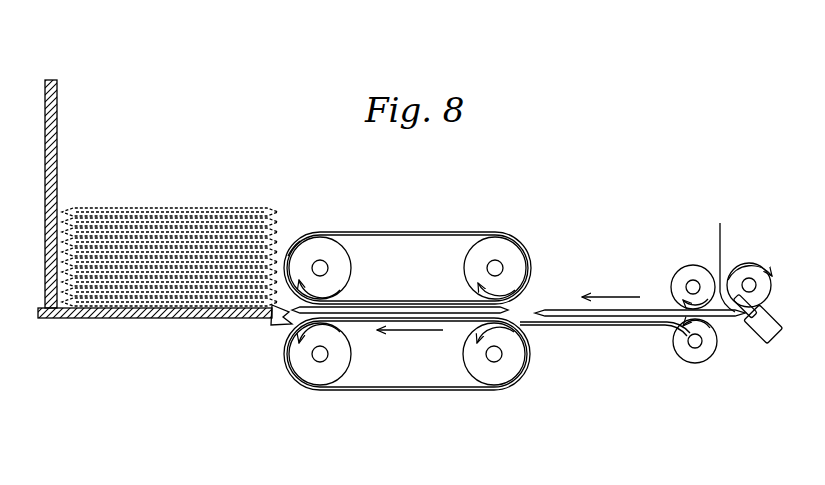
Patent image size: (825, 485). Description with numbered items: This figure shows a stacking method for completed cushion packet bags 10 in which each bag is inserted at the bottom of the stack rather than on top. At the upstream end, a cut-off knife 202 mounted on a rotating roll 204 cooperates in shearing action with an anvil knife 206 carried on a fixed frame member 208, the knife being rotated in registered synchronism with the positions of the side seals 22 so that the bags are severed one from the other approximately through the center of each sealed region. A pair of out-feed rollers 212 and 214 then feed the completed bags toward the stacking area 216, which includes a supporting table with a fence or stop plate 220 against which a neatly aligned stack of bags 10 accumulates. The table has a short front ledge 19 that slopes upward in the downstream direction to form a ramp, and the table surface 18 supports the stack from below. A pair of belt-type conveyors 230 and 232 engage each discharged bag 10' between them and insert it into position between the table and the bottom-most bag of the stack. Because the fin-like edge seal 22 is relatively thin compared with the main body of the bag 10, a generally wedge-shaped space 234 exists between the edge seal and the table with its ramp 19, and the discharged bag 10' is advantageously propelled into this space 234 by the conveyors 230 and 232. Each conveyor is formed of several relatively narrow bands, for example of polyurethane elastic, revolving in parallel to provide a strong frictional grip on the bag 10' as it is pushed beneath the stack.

The packet bag 10 is at (471, 227).
The discharged bag 10' is at (400, 293).
The support plate 18 is at (152, 306).
The separator wedge 19 is at (279, 319).
The side seal 22 is at (62, 210).
The cut-off knife 202 is at (715, 255).
The rotating roll 204 is at (748, 262).
The anvil knife 206 is at (763, 346).
The fixed frame member 208 is at (737, 330).
The out-feed roller 212 is at (679, 268).
The out-feed roller 214 is at (680, 354).
The stacking area 216 is at (227, 92).
The stop plate 220 is at (58, 102).
The belt-type conveyor 230 is at (448, 225).
The belt-type conveyor 232 is at (429, 397).
The wedge-shaped space 234 is at (297, 250).